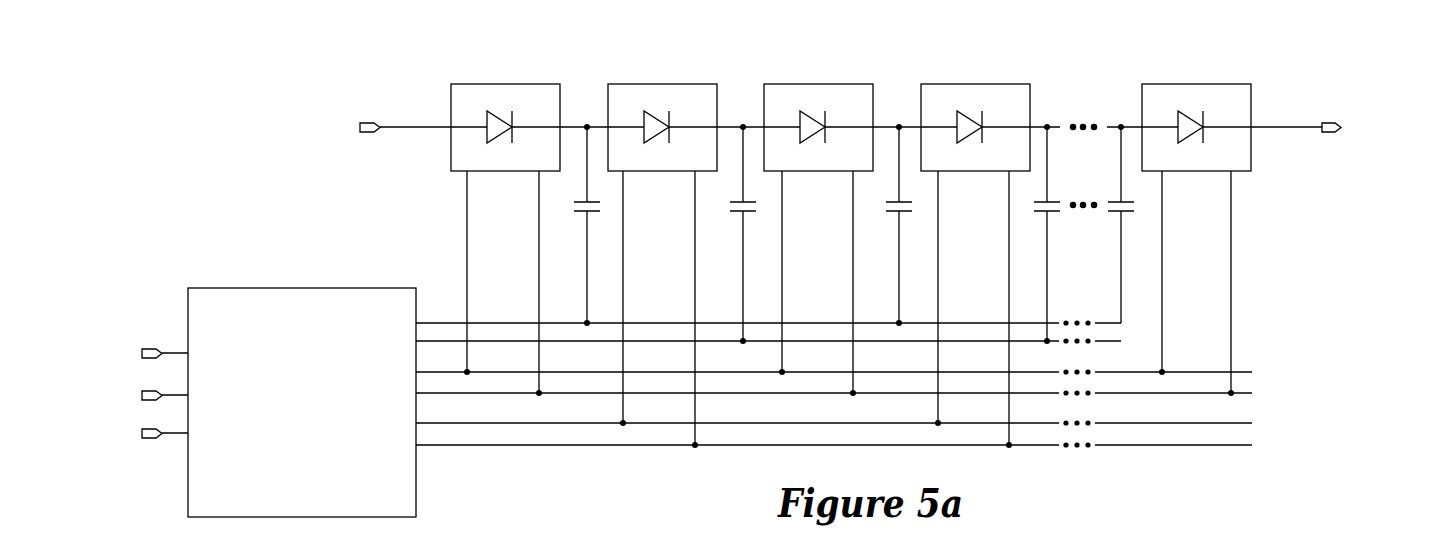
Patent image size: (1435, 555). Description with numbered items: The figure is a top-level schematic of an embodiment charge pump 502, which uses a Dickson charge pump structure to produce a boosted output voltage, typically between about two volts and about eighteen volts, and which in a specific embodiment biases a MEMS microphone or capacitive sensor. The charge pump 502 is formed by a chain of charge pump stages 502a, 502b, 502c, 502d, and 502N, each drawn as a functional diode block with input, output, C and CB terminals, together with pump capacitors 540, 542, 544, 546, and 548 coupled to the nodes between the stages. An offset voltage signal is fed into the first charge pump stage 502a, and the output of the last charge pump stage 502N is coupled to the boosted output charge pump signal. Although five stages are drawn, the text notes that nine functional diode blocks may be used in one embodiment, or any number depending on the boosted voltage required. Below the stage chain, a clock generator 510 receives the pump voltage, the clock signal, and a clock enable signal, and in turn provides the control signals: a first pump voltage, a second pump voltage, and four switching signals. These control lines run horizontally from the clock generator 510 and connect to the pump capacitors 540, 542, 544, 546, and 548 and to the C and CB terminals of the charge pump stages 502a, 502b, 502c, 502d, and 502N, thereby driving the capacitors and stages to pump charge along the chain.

The charge pump 502 is at (212, 100).
The first charge pump stage 502a is at (539, 83).
The charge pump stage 502b is at (699, 83).
The charge pump stage 502c is at (855, 83).
The charge pump stage 502d is at (1007, 83).
The last charge pump stage 502N is at (1200, 83).
The clock generator 510 is at (370, 287).
The pump capacitor 540 is at (590, 212).
The pump capacitor 542 is at (746, 212).
The pump capacitor 544 is at (902, 212).
The pump capacitor 546 is at (1050, 212).
The pump capacitor 548 is at (1124, 212).